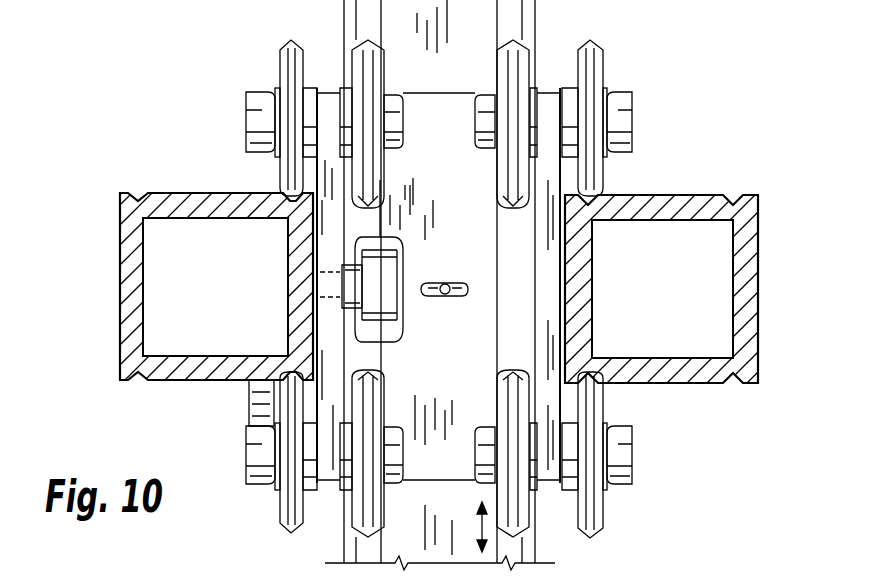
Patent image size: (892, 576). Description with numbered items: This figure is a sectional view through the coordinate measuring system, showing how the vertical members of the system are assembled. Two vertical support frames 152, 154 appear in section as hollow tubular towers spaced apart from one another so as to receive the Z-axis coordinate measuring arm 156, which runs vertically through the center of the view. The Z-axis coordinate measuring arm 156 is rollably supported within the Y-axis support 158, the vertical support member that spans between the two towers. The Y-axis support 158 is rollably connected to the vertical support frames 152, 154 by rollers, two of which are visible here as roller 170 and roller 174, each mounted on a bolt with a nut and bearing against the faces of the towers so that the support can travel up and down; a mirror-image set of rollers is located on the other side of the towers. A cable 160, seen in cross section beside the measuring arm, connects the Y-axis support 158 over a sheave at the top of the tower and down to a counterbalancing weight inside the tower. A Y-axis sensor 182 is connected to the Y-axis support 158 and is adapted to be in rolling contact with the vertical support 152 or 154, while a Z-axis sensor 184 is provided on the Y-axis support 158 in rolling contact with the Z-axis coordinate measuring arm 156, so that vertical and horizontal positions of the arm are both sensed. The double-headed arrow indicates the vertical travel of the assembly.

The vertical support frame 152 is at (752, 315).
The vertical support frame 154 is at (128, 297).
The Z-axis coordinate measuring arm 156 is at (488, 20).
The Y-axis support 158 is at (545, 329).
The cable 160 is at (447, 283).
The roller 170 is at (265, 432).
The roller 174 is at (605, 411).
The Y-axis sensor 182 is at (265, 402).
The Z-axis sensor 184 is at (390, 288).